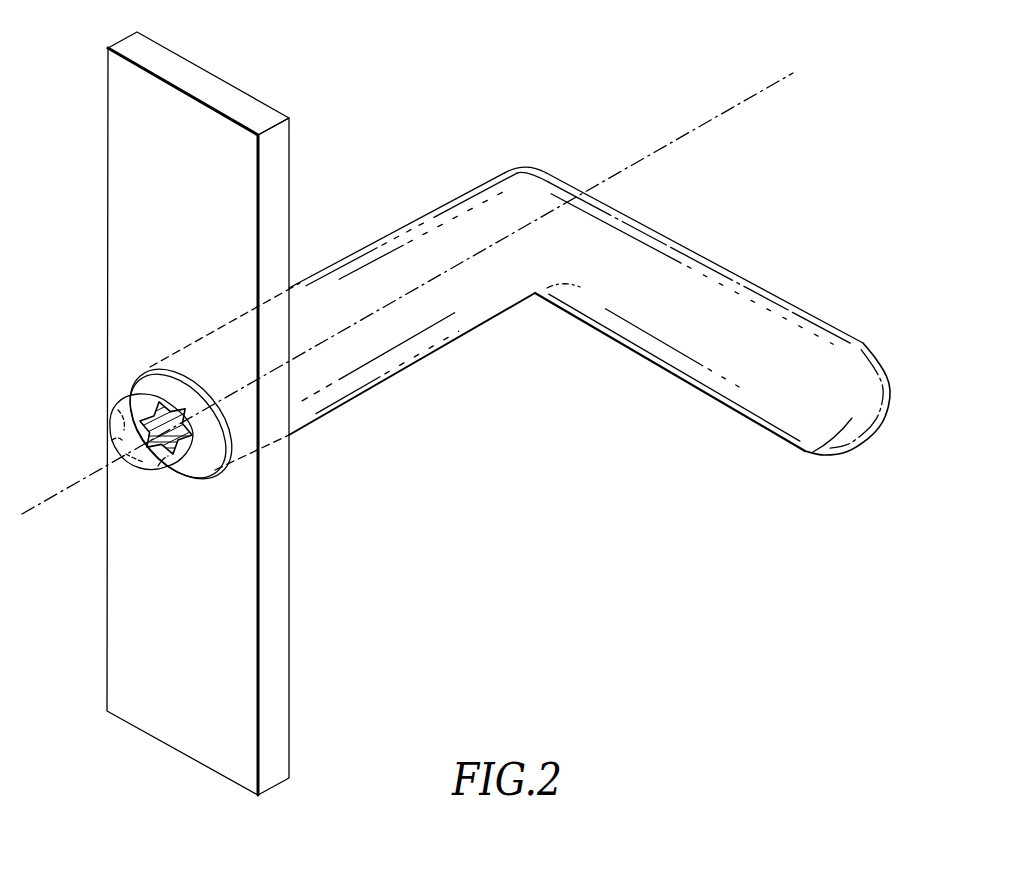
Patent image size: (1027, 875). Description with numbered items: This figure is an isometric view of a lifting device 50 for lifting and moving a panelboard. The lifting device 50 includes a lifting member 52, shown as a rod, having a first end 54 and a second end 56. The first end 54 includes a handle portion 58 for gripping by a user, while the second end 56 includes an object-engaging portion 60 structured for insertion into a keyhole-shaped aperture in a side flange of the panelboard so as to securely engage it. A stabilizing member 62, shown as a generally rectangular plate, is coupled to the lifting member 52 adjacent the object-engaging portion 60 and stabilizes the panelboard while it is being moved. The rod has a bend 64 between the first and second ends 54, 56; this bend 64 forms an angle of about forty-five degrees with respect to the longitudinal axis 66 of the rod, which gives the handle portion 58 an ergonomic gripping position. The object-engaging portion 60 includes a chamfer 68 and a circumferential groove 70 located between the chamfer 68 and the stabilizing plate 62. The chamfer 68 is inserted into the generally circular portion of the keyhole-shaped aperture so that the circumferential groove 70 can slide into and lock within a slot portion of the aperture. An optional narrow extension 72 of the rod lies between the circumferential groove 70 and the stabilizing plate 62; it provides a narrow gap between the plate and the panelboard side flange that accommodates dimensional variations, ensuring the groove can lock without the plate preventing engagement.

The lifting device 50 is at (505, 642).
The lifting member 52 is at (589, 281).
The first end 54 is at (803, 478).
The second end 56 is at (301, 262).
The handle portion 58 is at (760, 318).
The object-engaging portion 60 is at (170, 416).
The stabilizing member 62 is at (125, 168).
The bend 64 is at (532, 200).
The longitudinal axis 66 is at (750, 100).
The chamfer 68 is at (150, 478).
The circumferential groove 70 is at (168, 388).
The narrow extension 72 is at (215, 470).